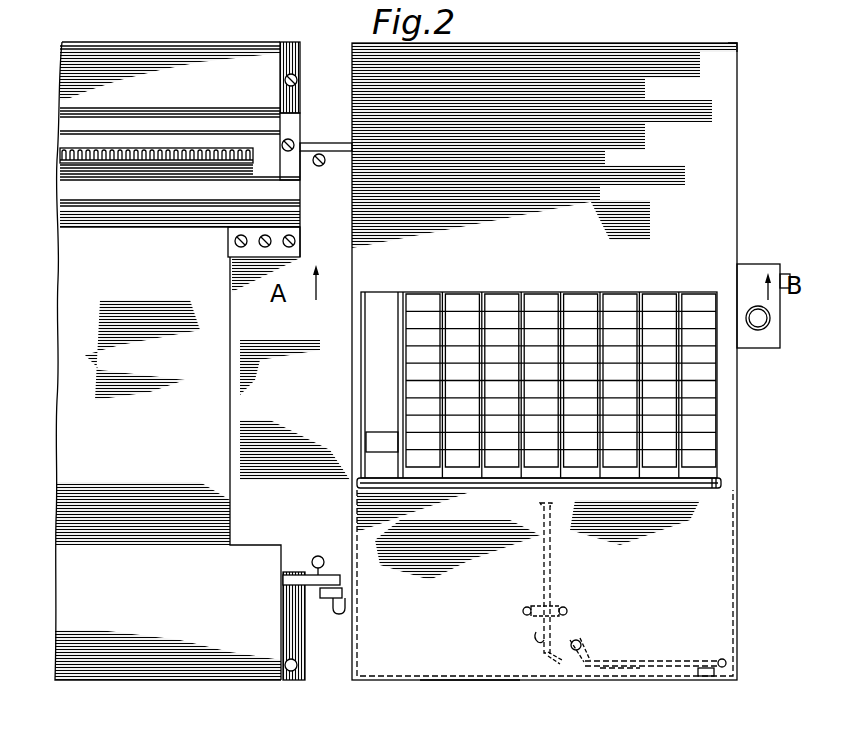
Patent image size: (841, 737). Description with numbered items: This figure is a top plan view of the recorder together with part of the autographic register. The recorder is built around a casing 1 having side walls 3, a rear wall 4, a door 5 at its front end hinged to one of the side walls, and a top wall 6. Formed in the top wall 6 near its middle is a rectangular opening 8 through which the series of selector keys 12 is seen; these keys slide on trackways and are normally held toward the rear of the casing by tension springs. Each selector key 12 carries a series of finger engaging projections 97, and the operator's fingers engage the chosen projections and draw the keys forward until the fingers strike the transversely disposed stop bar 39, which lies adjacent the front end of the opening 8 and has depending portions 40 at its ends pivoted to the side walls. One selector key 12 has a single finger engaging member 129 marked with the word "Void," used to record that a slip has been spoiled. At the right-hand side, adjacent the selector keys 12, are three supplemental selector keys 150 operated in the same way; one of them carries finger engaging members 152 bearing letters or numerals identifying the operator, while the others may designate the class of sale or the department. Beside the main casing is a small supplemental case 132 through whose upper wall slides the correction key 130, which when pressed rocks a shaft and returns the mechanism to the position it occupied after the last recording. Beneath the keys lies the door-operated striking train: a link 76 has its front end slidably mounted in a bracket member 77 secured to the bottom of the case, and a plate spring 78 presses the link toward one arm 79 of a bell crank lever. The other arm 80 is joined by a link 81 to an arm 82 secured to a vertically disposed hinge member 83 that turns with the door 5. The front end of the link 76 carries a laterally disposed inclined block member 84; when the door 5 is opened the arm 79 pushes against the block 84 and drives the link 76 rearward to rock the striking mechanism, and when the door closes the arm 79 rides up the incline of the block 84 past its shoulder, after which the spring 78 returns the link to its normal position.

The casing 1 is at (740, 428).
The side walls 3 is at (352, 62).
The rear wall 4 is at (620, 43).
The door 5 is at (468, 682).
The top wall 6 is at (701, 46).
The rectangular opening 8 is at (360, 306).
The selector keys 12 is at (570, 298).
The stop bar 39 is at (703, 488).
The depending portions 40 is at (358, 484).
The link 76 is at (542, 558).
The bracket member 77 is at (535, 605).
The plate spring 78 is at (534, 638).
The arm of bell crank lever 79 is at (556, 656).
The arm of bell crank lever 80 is at (590, 659).
The link 81 is at (628, 670).
The arm 82 is at (728, 682).
The hinge member 83 is at (705, 680).
The inclined block member 84 is at (580, 636).
The projections 97 is at (508, 312).
The finger engaging member 129 is at (362, 440).
The correction key 130 is at (758, 332).
The supplemental case 132 is at (753, 272).
The supplemental selector keys 150 is at (672, 296).
The finger engaging members 152 is at (620, 396).